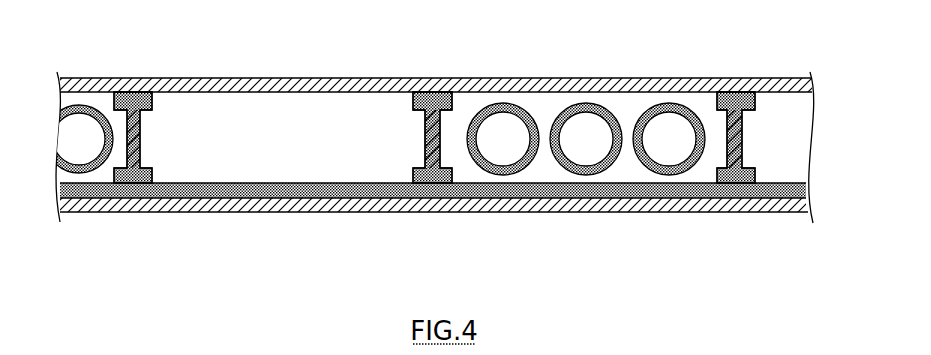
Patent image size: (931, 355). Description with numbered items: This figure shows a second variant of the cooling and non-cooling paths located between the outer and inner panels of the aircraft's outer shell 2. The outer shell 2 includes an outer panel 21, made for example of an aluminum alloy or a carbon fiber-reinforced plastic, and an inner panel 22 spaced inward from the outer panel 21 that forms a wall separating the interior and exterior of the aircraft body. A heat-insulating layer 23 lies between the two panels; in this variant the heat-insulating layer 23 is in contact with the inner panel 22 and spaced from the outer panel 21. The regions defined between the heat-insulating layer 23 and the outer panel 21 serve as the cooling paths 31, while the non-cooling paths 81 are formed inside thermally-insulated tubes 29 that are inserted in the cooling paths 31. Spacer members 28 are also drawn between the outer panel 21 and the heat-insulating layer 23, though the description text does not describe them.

The outer shell 2 is at (118, 52).
The outer panel 21 is at (352, 78).
The inner panel 22 is at (392, 213).
The heat-insulating layer 23 is at (262, 213).
The I-beam spacer 28 is at (143, 118).
The thermally-insulated tube 29 is at (503, 175).
The cooling path 31 is at (285, 155).
The non-cooling path 81 is at (491, 152).